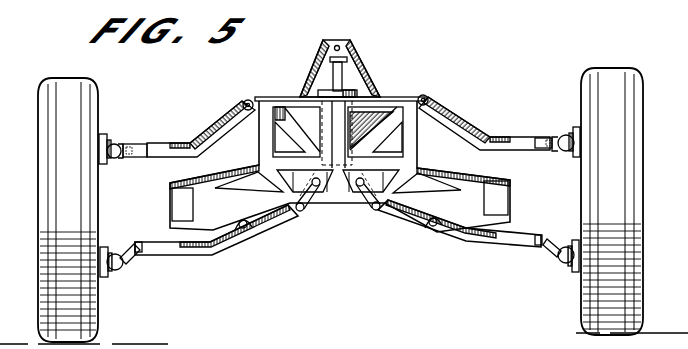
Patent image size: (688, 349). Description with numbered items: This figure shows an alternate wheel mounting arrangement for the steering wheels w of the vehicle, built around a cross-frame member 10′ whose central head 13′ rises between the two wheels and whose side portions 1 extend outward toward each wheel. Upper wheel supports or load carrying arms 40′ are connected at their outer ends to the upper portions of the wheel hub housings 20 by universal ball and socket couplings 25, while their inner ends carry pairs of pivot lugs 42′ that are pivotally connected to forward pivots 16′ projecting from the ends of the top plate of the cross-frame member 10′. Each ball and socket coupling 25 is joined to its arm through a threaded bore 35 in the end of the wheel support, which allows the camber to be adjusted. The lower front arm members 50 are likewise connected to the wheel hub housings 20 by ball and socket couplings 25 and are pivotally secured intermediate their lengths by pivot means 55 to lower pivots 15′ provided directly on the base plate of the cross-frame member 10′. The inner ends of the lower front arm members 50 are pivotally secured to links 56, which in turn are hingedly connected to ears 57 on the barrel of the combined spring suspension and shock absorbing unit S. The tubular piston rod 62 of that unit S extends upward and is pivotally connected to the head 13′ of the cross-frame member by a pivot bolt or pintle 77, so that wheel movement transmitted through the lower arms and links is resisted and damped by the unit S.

The frame opening 1 is at (345, 192).
The cross-frame member 10′ is at (345, 156).
The central tower 13′ is at (359, 68).
The lower pivots 15′ is at (340, 218).
The pivots 16′ is at (335, 89).
The wheel hub housings 20 is at (339, 202).
The ball and socket couplings 25 is at (340, 186).
The bore 35 is at (340, 189).
The upper wheel supports or load carrying arms 40′ is at (348, 107).
The pivot lugs 42′ is at (340, 103).
The lower front arm members 50 is at (338, 247).
The pivot means 55 is at (337, 247).
The links 56 is at (338, 204).
The ears 57 is at (337, 136).
The piston rod 62 is at (315, 71).
The pivot bolt or pintle 77 is at (370, 39).
The spring suspension and shock absorbing unit S is at (373, 128).
The wheel w is at (338, 205).